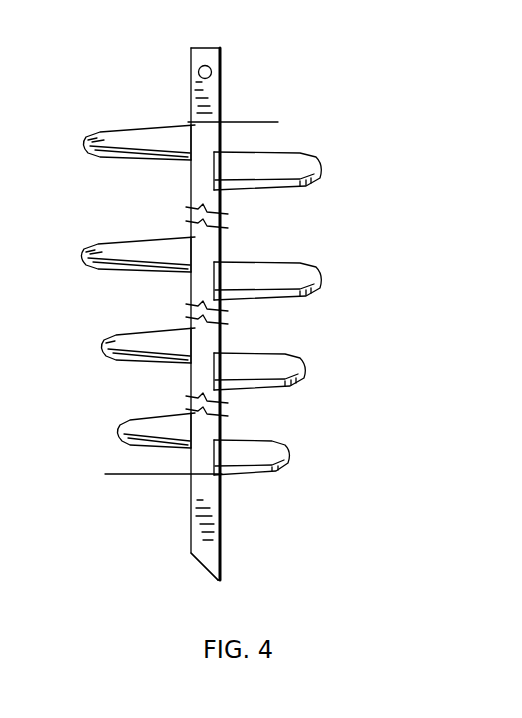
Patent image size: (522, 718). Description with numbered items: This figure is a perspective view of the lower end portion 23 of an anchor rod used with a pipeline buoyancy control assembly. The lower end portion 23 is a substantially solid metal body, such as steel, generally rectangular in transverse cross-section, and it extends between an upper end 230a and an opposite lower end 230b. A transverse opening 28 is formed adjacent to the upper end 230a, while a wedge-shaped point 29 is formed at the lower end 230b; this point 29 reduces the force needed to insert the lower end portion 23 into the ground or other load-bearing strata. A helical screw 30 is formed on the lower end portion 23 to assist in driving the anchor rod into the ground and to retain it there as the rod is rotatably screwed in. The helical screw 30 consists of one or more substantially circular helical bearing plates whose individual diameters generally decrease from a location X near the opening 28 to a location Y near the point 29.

The lower end portion 23 is at (350, 213).
The transverse opening 28 is at (212, 72).
The wedge-shaped point 29 is at (218, 571).
The helical screw 30 is at (97, 157).
The upper end 230a is at (205, 47).
The lower end 230b is at (198, 540).
The location X is at (241, 122).
The location Y is at (154, 474).